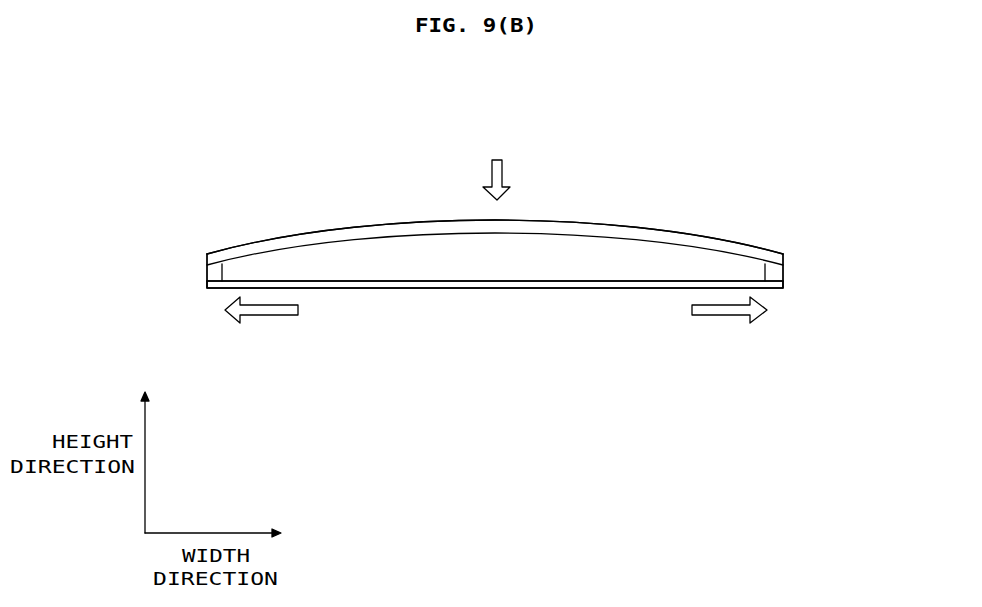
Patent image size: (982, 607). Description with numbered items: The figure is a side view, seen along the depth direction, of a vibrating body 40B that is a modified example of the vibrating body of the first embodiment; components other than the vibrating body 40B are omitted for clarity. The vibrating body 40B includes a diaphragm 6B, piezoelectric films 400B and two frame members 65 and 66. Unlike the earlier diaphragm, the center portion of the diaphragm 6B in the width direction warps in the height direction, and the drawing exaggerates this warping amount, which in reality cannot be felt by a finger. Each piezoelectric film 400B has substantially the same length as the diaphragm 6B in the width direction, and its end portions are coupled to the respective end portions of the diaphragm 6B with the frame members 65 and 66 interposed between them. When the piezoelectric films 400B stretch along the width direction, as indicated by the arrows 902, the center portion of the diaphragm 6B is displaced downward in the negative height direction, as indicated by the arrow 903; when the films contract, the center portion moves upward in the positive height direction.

The vibrating body 40B is at (807, 123).
The diaphragm 6B is at (727, 241).
The frame member 65 is at (207, 273).
The frame member 66 is at (776, 274).
The piezoelectric film 400B is at (657, 289).
The arrow 903 is at (504, 168).
The arrows 902 is at (273, 314).